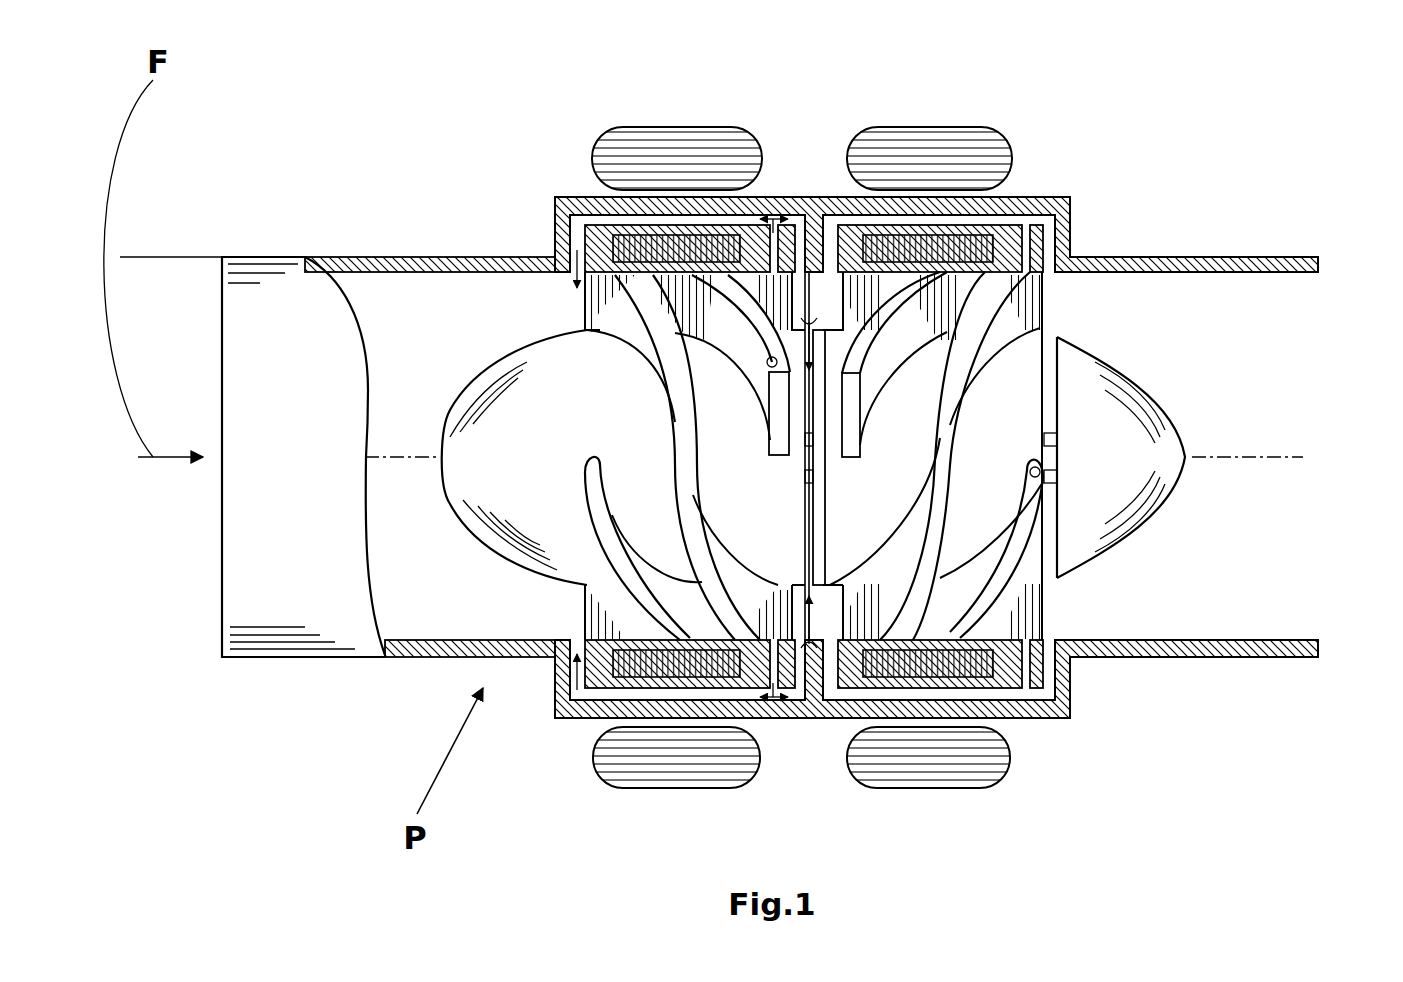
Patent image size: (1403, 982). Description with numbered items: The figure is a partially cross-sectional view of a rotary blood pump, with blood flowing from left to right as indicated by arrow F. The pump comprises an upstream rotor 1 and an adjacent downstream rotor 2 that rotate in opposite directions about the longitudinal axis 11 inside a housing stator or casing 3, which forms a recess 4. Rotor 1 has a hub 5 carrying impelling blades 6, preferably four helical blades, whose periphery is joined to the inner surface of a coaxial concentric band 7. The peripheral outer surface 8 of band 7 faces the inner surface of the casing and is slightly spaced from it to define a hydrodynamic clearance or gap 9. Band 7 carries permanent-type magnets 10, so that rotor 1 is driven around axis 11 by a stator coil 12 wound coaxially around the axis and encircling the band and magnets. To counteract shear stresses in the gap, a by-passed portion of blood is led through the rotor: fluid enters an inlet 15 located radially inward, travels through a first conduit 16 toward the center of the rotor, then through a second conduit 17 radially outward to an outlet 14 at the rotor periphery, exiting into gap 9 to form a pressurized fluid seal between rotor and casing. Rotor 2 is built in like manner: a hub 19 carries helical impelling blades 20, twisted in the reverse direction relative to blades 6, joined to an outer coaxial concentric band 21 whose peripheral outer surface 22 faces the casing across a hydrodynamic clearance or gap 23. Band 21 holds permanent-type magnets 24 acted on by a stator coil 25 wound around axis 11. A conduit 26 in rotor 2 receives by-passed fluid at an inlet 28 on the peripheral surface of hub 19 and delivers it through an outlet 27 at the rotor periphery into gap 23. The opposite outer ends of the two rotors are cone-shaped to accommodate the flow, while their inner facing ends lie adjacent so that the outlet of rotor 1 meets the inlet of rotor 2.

The upstream rotor 1 is at (496, 338).
The downstream rotor 2 is at (1160, 354).
The housing stator or casing 3 is at (285, 347).
The recess 4 is at (1057, 196).
The hub 5 is at (505, 468).
The impelling blades 6 is at (577, 315).
The coaxial concentric band 7 is at (590, 228).
The peripheral outer surface 8 is at (645, 688).
The hydrodynamic clearance or gap 9 is at (618, 698).
The permanent-type magnets 10 is at (668, 245).
The axis 11 is at (407, 453).
The stator coil 12 is at (717, 153).
The outlet 14 is at (774, 700).
The inlet 15 is at (822, 690).
The first conduit 16 is at (802, 470).
The second conduit 17 is at (767, 362).
The hub 19 is at (1110, 475).
The impelling blades 20 is at (1005, 327).
The outer coaxial concentric band 21 is at (1005, 268).
The peripheral outer surface 22 is at (848, 228).
The hydrodynamic clearance or gap 23 is at (985, 690).
The permanent-type magnets 24 is at (913, 232).
The stator coil 25 is at (1005, 150).
The conduit 26 is at (1057, 440).
The outlet 27 is at (1047, 585).
The inlet 28 is at (1047, 583).